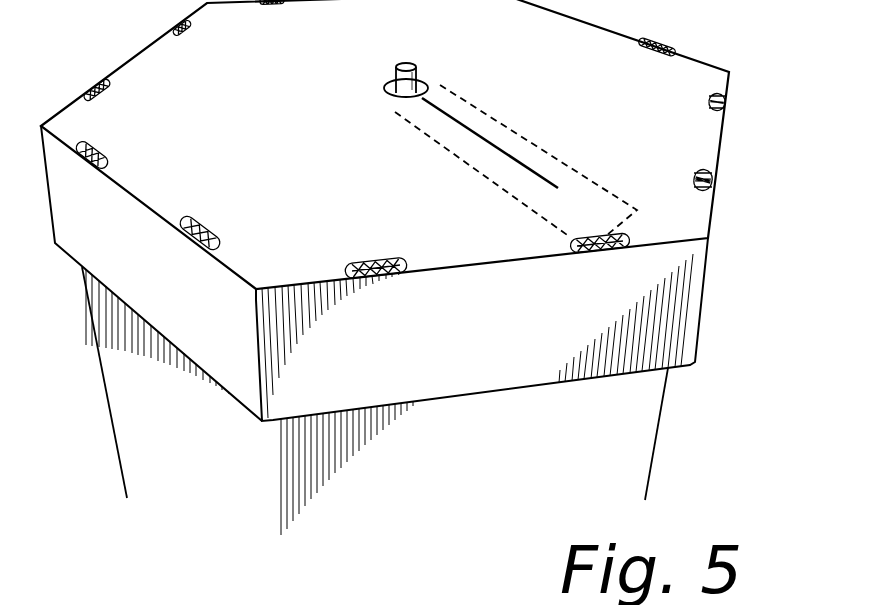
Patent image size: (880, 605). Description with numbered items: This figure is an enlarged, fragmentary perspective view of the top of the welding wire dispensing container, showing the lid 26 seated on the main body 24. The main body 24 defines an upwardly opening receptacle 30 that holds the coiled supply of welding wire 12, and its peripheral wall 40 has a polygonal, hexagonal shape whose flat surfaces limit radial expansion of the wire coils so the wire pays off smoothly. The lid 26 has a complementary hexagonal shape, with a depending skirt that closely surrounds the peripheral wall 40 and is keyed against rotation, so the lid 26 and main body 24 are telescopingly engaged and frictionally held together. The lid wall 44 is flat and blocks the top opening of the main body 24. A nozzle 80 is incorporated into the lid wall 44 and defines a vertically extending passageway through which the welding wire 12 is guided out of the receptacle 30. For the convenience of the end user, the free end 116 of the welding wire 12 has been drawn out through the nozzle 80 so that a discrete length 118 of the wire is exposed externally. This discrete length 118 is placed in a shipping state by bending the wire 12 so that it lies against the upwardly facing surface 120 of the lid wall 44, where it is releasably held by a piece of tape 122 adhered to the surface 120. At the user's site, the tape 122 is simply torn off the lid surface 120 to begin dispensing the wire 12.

The welding wire 12 is at (491, 141).
The main body 24 is at (193, 454).
The lid 26 is at (283, 260).
The receptacle 30 is at (560, 318).
The peripheral wall 40 is at (494, 454).
The lid wall 44 is at (347, 143).
The nozzle 80 is at (420, 70).
The free end 116 is at (558, 188).
The discrete length 118 is at (461, 131).
The upwardly facing surface 120 is at (637, 208).
The tape 122 is at (555, 156).